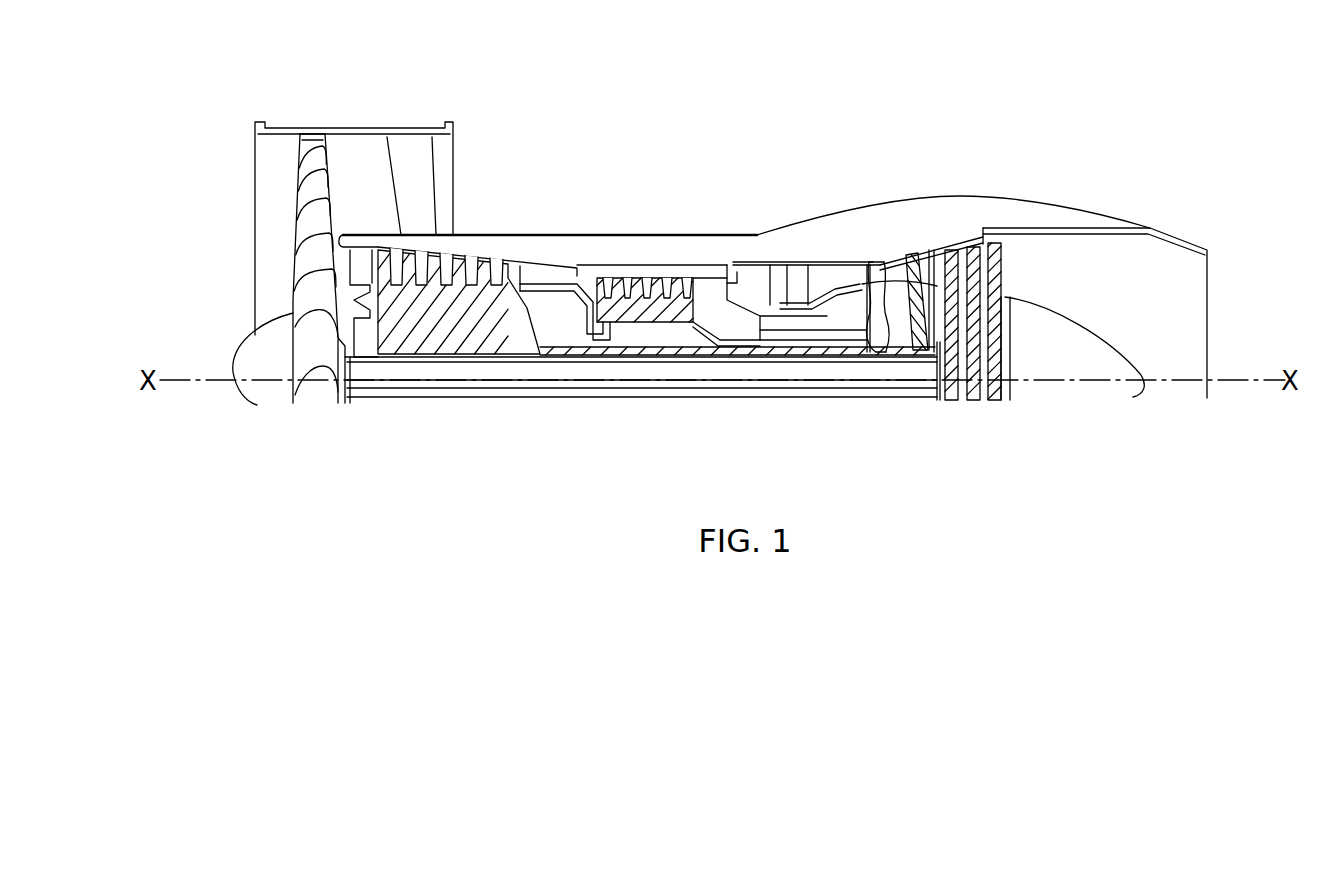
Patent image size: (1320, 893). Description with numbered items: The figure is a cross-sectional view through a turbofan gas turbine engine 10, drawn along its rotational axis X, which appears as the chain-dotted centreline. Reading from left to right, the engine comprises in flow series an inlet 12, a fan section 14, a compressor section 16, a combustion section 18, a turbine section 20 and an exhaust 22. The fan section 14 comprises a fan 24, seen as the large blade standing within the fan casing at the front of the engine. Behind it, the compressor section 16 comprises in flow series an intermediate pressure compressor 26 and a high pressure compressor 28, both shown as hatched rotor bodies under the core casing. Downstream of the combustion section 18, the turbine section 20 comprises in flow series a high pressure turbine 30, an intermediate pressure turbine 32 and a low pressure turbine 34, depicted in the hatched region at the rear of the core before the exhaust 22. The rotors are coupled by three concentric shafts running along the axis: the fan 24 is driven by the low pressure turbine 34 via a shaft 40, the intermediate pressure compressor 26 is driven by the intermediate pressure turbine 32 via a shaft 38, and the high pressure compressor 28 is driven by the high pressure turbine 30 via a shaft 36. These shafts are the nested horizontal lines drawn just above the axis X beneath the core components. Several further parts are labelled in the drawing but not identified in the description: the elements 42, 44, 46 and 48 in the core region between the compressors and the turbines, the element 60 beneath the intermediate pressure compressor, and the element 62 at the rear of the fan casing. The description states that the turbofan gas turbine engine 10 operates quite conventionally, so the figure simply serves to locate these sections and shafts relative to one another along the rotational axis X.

The turbofan gas turbine engine 10 is at (617, 158).
The inlet 12 is at (230, 250).
The fan section 14 is at (293, 123).
The compressor section 16 is at (605, 228).
The combustion section 18 is at (798, 258).
The turbine section 20 is at (997, 190).
The exhaust 22 is at (1193, 325).
The fan 24 is at (320, 158).
The intermediate pressure compressor 26 is at (455, 297).
The high pressure compressor 28 is at (651, 275).
The high pressure turbine 30 is at (881, 290).
The intermediate pressure turbine 32 is at (912, 290).
The low pressure turbine 34 is at (968, 288).
The shaft 36 is at (862, 342).
The shaft 38 is at (597, 365).
The shaft 40 is at (503, 372).
The casing 42 is at (735, 322).
The combustor 44 is at (800, 318).
The fuel injector 46 is at (765, 310).
The turbine casing 48 is at (758, 265).
The duct 60 is at (420, 244).
The outlet guide vane 62 is at (455, 233).